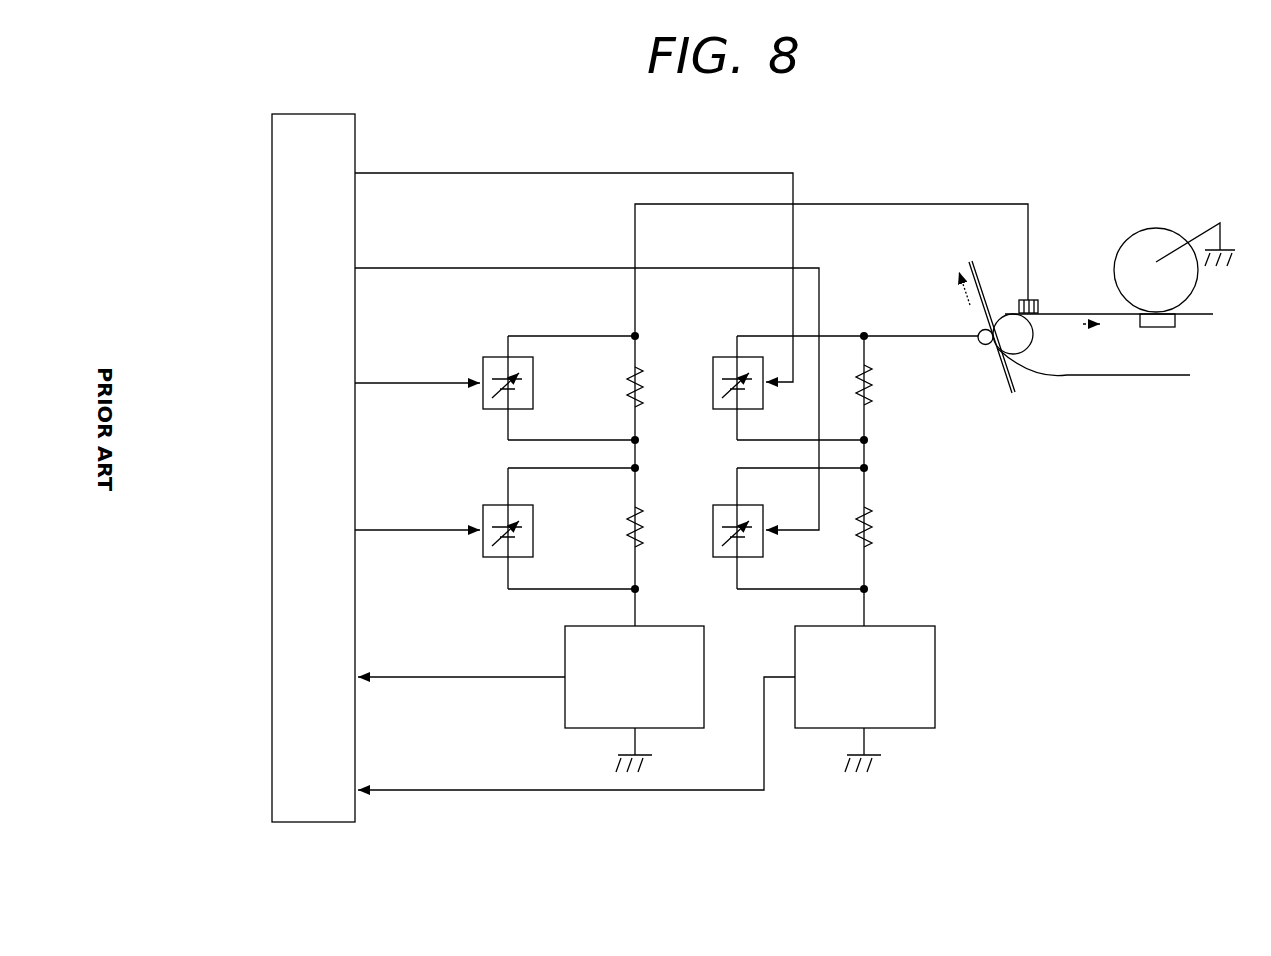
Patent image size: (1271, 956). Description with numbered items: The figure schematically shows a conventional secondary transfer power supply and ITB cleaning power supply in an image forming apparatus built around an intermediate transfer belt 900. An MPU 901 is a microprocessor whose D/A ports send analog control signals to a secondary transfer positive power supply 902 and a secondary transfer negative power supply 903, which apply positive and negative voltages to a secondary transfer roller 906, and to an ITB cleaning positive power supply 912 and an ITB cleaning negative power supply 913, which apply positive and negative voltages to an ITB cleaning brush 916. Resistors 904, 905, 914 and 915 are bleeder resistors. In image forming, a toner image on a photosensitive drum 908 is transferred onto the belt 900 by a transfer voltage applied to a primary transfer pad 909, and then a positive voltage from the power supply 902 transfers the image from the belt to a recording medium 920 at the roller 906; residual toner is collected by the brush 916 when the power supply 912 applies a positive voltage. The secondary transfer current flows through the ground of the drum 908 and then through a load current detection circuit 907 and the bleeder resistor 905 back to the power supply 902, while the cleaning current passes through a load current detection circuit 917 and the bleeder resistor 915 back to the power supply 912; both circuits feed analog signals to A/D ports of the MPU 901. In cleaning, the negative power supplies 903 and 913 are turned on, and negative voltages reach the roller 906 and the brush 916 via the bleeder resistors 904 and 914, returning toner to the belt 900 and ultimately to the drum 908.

The MPU 901 is at (272, 457).
The secondary transfer positive power supply 902 is at (730, 356).
The secondary transfer negative power supply 903 is at (730, 504).
The bleeder resistor 904 is at (872, 374).
The bleeder resistor 905 is at (872, 515).
The secondary transfer roller 906 is at (977, 333).
The load current detection circuit 907 is at (901, 625).
The photosensitive drum 908 is at (1128, 232).
The primary transfer pad 909 is at (1160, 330).
The ITB cleaning positive power supply 912 is at (500, 356).
The ITB cleaning negative power supply 913 is at (500, 504).
The bleeder resistor 914 is at (627, 378).
The bleeder resistor 915 is at (627, 516).
The ITB cleaning brush 916 is at (1038, 298).
The load current detection circuit 917 is at (660, 625).
The recording medium 920 is at (1008, 382).
The intermediate transfer belt 900 is at (1100, 377).